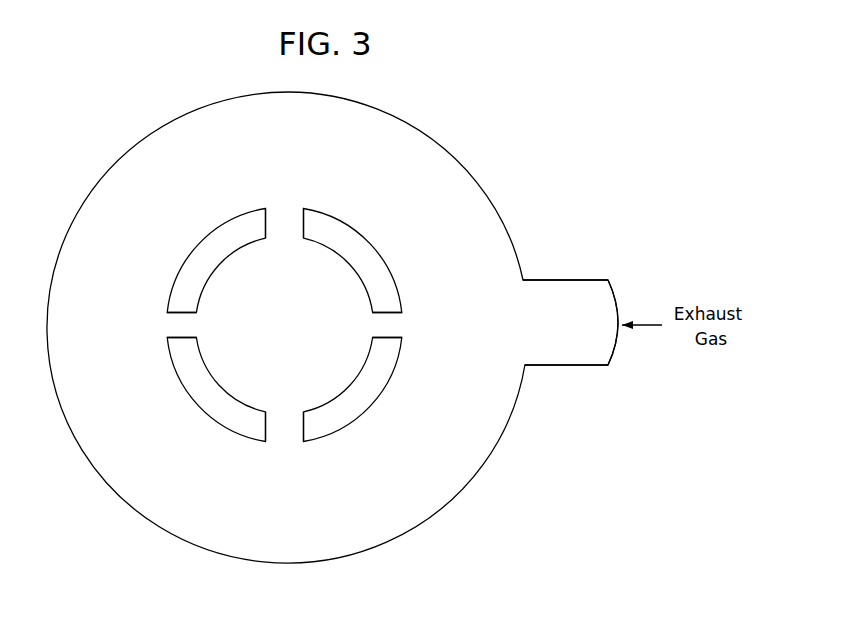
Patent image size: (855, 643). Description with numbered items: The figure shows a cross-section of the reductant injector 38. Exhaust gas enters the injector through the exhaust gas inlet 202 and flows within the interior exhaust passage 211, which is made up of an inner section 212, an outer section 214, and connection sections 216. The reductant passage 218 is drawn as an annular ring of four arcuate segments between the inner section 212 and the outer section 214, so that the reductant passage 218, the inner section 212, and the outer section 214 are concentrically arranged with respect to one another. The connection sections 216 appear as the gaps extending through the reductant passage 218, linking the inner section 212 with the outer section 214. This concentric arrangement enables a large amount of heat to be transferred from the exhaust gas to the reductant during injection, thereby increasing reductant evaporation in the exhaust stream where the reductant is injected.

The reductant injector 38 is at (667, 142).
The exhaust gas inlet 202 is at (520, 273).
The interior exhaust passage 211 is at (468, 206).
The inner section 212 is at (270, 333).
The outer section 214 is at (368, 191).
The connection sections 216 is at (284, 207).
The reductant passage 218 is at (205, 236).